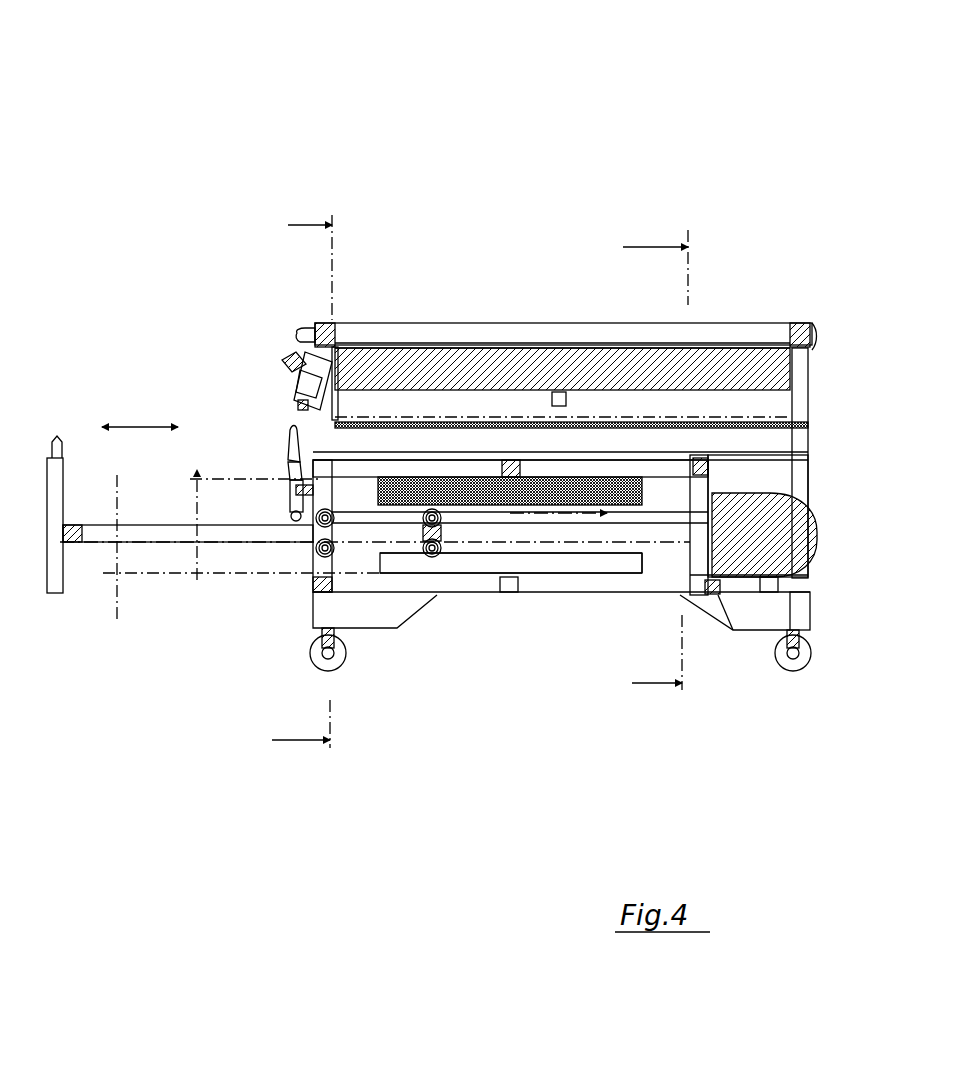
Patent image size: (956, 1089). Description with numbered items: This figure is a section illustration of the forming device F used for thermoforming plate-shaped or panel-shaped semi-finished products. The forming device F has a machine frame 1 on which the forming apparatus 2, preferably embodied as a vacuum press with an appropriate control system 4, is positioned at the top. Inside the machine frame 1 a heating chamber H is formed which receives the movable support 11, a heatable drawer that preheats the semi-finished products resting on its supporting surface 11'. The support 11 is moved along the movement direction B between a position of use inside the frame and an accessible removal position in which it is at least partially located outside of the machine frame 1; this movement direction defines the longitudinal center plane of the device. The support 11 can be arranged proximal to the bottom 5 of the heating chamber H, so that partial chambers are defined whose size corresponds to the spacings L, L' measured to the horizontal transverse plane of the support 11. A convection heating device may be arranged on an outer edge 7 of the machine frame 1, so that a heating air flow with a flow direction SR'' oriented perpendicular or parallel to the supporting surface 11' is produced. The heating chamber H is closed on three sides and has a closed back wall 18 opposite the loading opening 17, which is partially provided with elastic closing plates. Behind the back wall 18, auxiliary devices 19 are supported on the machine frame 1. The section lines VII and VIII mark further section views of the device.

The machine frame 1 is at (362, 445).
The forming apparatus 2 is at (322, 318).
The control system 4 is at (302, 368).
The bottom 5 is at (497, 577).
The outer edge 7 is at (663, 500).
The support 11 is at (180, 612).
The supporting surface 11' is at (143, 535).
The loading opening 17 is at (313, 563).
The back wall 18 is at (700, 457).
The auxiliary devices 19 is at (767, 560).
The forming device F is at (757, 112).
The movement direction B is at (140, 392).
The spacing L is at (211, 488).
The spacing L' is at (108, 635).
The heating chamber H is at (667, 560).
The flow direction SR'' is at (558, 604).
The section line VII is at (640, 212).
The section line VIII is at (296, 189).